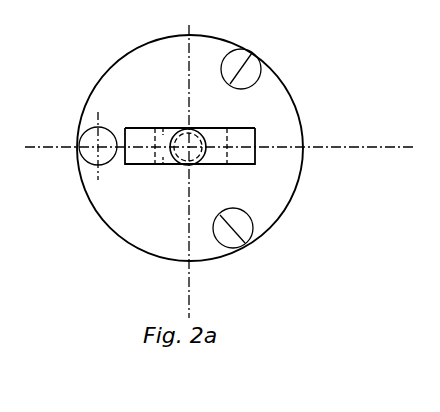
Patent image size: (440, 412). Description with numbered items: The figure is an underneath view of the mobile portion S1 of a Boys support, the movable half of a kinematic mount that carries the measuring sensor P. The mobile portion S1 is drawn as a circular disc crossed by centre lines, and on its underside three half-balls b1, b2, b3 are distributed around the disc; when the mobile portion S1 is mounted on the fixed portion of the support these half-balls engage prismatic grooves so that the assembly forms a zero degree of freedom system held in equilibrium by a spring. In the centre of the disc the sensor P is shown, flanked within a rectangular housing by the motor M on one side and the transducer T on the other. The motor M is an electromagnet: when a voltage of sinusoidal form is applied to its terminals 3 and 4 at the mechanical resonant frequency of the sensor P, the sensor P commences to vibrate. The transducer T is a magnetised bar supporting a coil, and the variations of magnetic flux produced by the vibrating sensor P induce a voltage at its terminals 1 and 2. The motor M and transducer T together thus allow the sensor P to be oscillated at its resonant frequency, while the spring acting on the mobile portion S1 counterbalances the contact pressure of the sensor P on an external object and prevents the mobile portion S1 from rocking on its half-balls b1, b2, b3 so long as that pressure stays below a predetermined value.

The terminal 1 is at (103, 136).
The terminal 2 is at (128, 166).
The terminal 3 is at (236, 128).
The terminal 4 is at (256, 165).
The half-ball b1 is at (252, 63).
The half-ball b2 is at (248, 233).
The half-ball b3 is at (136, 126).
The sensor P is at (184, 141).
The transducer T is at (128, 165).
The motor M is at (227, 163).
The mobile portion S1 is at (265, 102).